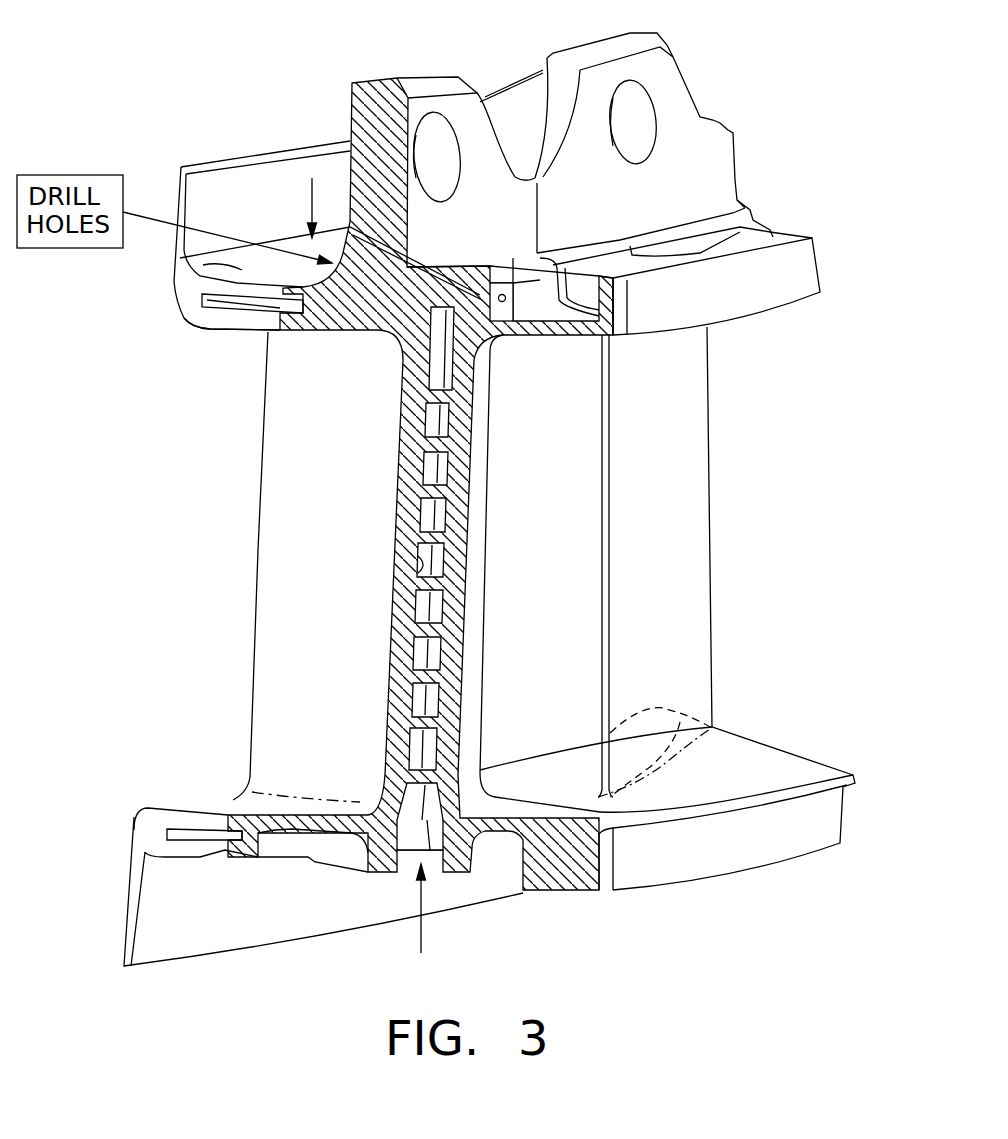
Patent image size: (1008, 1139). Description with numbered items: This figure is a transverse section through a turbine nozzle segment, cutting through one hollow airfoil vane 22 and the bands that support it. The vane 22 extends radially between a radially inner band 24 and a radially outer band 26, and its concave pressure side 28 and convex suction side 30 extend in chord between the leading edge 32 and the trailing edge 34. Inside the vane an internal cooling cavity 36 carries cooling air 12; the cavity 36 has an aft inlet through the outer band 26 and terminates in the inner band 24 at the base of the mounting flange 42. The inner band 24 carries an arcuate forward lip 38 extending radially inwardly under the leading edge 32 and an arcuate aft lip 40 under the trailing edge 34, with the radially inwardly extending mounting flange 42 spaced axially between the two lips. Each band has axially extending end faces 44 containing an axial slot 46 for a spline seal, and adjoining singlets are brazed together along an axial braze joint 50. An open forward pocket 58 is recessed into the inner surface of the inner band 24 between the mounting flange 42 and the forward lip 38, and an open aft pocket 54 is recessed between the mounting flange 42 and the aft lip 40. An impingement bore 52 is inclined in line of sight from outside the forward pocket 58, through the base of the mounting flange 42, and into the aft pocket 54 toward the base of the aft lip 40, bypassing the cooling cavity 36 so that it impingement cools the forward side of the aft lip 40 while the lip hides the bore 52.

The cooling air 12 is at (312, 201).
The airfoil vane 22 is at (722, 457).
The inner band 24 is at (340, 333).
The outer band 26 is at (134, 868).
The pressure side 28 is at (353, 647).
The suction side 30 is at (478, 523).
The leading edge 32 is at (260, 543).
The trailing edge 34 is at (601, 565).
The internal cooling cavity 36 is at (405, 564).
The forward lip 38 is at (233, 163).
The aft lip 40 is at (822, 262).
The mounting flange 42 is at (430, 87).
The end face 44 is at (240, 331).
The axial slot 46 is at (240, 323).
The axial braze joint 50 is at (629, 302).
The impingement bore 52 is at (425, 298).
The aft pocket 54 is at (513, 300).
The forward pocket 58 is at (202, 264).